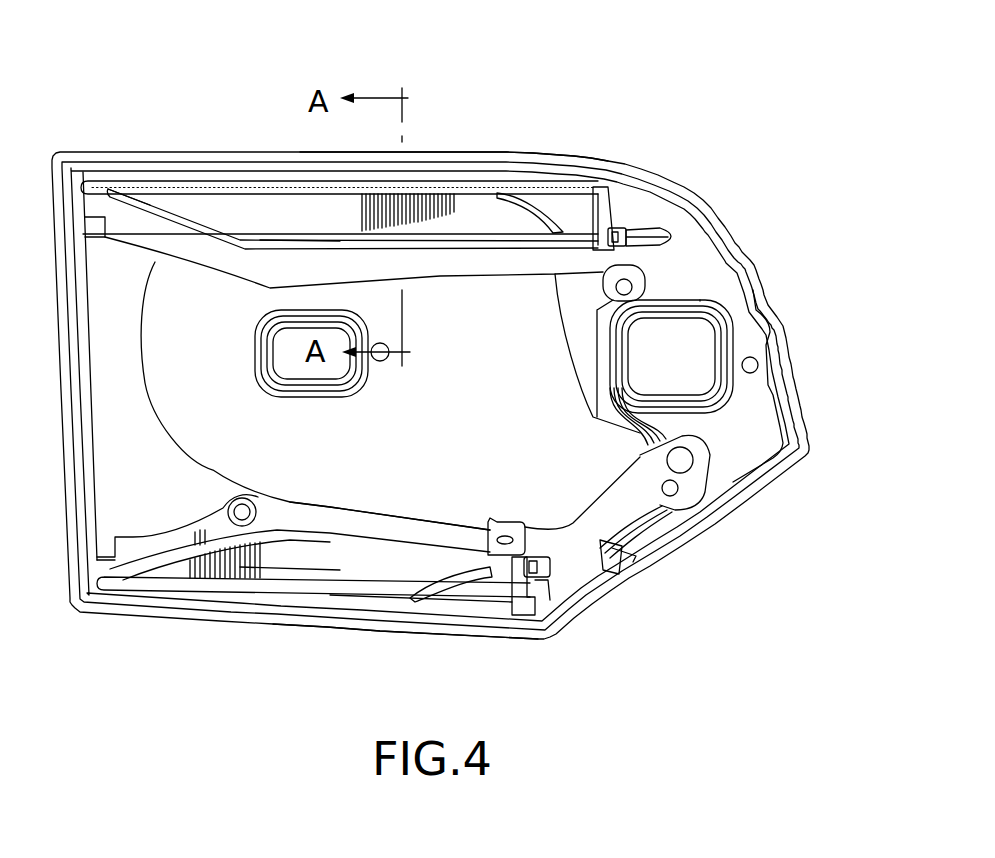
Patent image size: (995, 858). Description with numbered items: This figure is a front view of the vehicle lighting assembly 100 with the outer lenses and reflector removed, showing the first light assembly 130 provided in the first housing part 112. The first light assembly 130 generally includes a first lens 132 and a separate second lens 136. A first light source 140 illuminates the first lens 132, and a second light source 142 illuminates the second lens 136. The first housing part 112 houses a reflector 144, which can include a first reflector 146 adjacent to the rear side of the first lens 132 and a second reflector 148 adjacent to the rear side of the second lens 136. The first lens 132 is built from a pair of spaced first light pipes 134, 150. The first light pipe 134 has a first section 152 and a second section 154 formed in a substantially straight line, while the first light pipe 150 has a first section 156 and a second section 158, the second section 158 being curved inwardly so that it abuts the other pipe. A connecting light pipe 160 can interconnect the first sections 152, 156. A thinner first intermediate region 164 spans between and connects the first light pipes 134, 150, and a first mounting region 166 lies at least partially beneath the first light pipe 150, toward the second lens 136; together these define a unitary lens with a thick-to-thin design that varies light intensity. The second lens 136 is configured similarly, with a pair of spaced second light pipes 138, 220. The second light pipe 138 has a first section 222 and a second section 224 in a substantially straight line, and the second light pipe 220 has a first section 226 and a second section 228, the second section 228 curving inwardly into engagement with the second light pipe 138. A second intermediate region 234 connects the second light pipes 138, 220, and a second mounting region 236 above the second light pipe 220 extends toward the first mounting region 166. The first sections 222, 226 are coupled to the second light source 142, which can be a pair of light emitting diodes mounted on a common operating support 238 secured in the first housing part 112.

The vehicle door assembly 100 is at (752, 72).
The first housing part 112 is at (704, 267).
The first light assembly 130 is at (648, 220).
The first lens 132 is at (190, 265).
The first light pipe 134 is at (253, 183).
The second lens 136 is at (408, 614).
The second light pipe 138 is at (342, 597).
The first light source 140 is at (645, 215).
The second light source 142 is at (516, 609).
The reflector 144 is at (133, 500).
The first reflector 146 is at (452, 173).
The second reflector 148 is at (478, 622).
The first light pipe 150 is at (310, 250).
The first section 152 is at (560, 192).
The second section 154 is at (172, 186).
The first section 156 is at (523, 240).
The second section 158 is at (180, 218).
The connecting light pipe 160 is at (520, 205).
The first intermediate region 164 is at (300, 215).
The first mounting region 166 is at (215, 270).
The second light pipe 220 is at (349, 535).
The first section 222 is at (455, 607).
The second section 224 is at (215, 583).
The first section 226 is at (438, 537).
The second section 228 is at (193, 552).
The second intermediate region 234 is at (290, 568).
The second mounting region 236 is at (302, 517).
The common operating support 238 is at (527, 580).